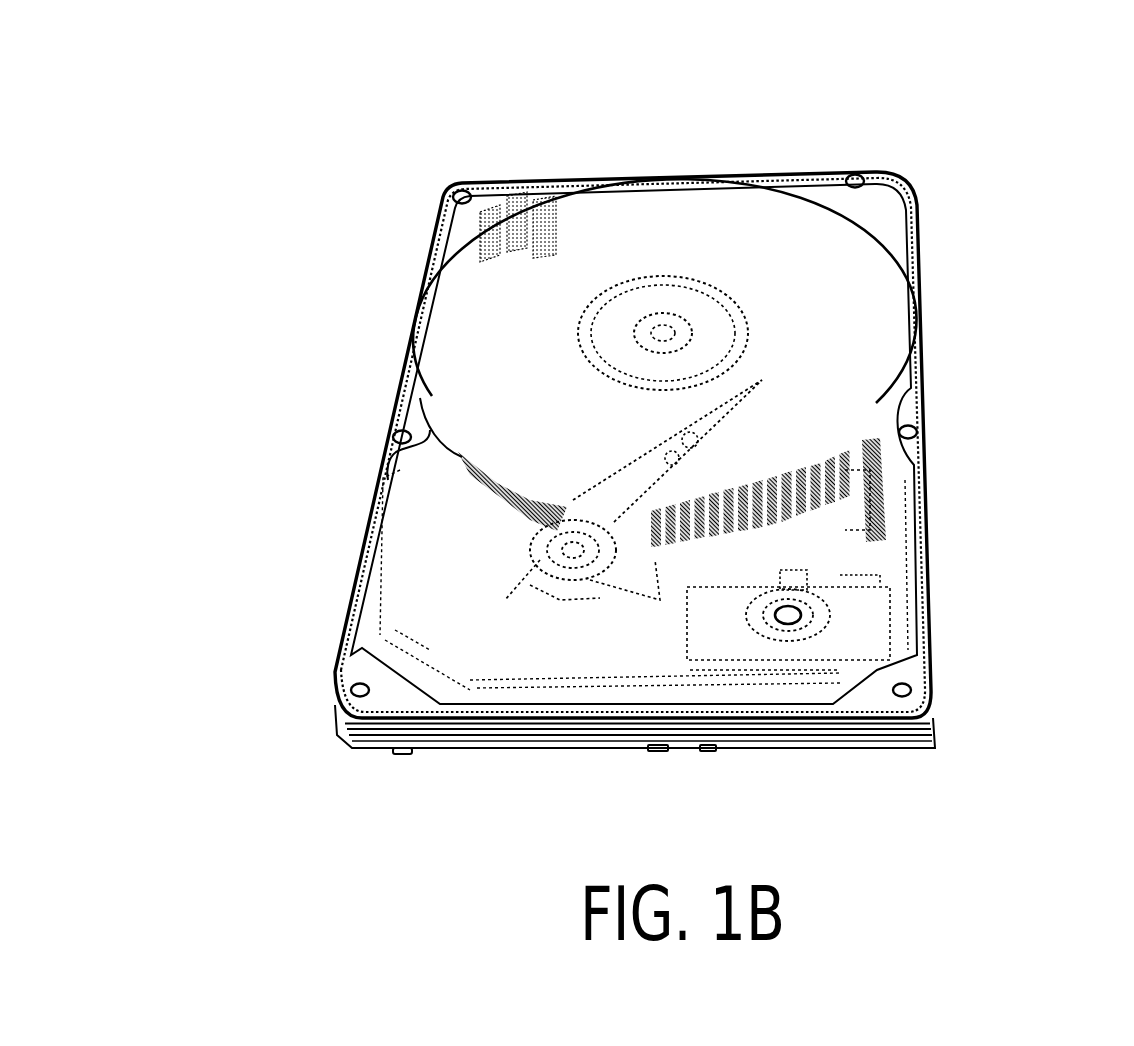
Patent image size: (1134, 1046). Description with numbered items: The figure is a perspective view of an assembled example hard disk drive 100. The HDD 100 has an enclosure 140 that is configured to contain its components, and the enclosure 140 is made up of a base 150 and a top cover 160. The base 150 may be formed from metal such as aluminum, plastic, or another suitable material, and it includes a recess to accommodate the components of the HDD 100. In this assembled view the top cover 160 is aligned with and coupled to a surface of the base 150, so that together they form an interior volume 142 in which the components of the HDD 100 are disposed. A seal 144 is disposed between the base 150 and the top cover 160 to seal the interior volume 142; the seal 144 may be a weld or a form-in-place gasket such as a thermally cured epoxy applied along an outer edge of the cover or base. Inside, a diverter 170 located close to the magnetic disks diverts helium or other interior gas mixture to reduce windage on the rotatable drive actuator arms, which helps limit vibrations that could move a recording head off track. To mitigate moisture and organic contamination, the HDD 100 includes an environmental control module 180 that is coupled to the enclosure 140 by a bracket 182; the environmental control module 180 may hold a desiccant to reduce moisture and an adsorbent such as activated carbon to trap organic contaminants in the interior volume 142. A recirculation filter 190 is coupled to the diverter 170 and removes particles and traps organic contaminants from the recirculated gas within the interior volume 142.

The hard disk drive 100 is at (460, 103).
The enclosure 140 is at (945, 172).
The interior volume 142 is at (929, 556).
The seal 144 is at (919, 272).
The base 150 is at (334, 720).
The top cover 160 is at (700, 256).
The diverter 170 is at (533, 192).
The environmental control module 180 is at (888, 639).
The bracket 182 is at (768, 582).
The recirculation filter 190 is at (492, 222).